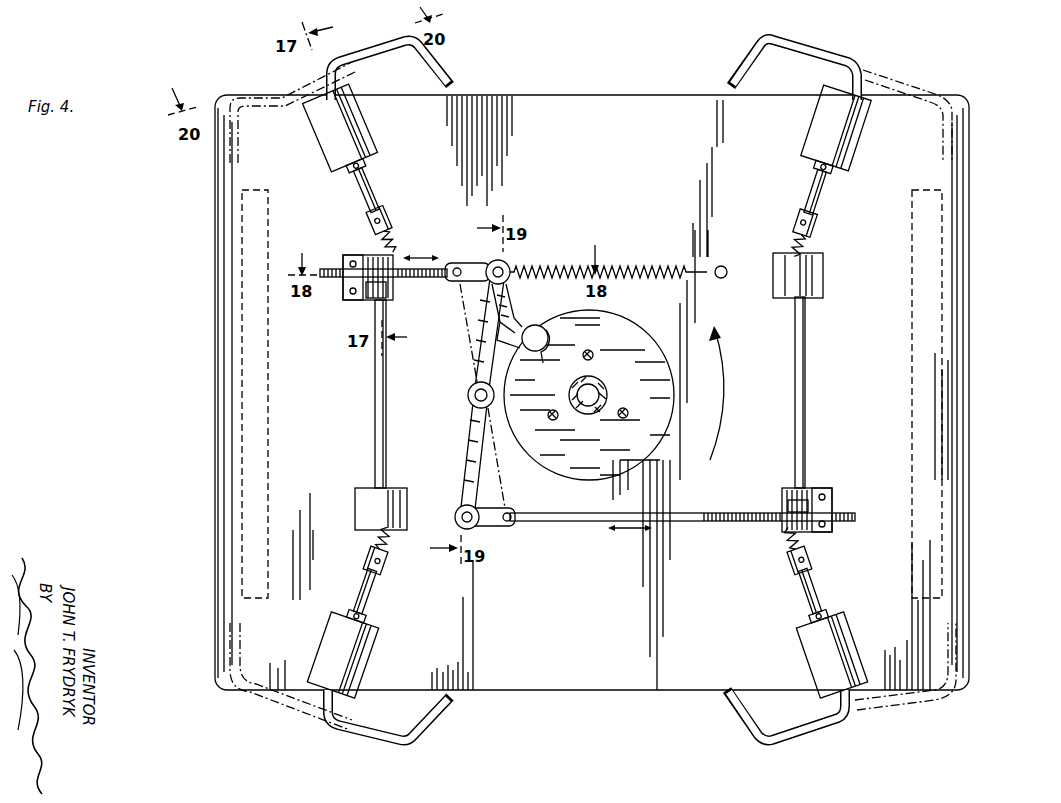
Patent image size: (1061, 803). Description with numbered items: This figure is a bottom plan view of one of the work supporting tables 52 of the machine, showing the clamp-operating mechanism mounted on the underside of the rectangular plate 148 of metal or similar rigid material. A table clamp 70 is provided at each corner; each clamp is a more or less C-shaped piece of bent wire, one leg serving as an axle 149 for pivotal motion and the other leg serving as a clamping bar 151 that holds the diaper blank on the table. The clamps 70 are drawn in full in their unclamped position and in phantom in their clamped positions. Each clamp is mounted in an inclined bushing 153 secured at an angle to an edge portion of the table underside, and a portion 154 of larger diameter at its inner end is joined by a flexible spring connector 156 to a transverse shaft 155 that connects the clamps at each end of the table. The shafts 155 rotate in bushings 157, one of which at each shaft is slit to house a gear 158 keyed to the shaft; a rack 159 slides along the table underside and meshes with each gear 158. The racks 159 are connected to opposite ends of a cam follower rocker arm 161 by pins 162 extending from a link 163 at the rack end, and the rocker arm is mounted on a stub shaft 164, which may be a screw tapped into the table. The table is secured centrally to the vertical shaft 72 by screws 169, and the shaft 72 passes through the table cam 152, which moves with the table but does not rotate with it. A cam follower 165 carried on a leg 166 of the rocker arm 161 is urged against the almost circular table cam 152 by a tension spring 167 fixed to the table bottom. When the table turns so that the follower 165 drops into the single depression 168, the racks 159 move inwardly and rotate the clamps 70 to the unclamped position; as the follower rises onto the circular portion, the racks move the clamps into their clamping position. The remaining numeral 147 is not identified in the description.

The table 52 is at (968, 325).
The table clamp 70 is at (374, 50).
The vertical shaft 72 is at (609, 385).
The guide slot 147 is at (270, 437).
The plate 148 is at (571, 600).
The axle 149 is at (371, 187).
The clamping bar 151 is at (439, 74).
The table cam 152 is at (629, 325).
The inclined bushing 153 is at (358, 138).
The portion of larger diameter 154 is at (387, 208).
The transverse shaft 155 is at (375, 403).
The flexible spring connector 156 is at (387, 236).
The bushing 157 is at (368, 302).
The gear 158 is at (408, 280).
The rack 159 is at (412, 277).
The cam follower rocker arm 161 is at (467, 438).
The pin 162 is at (510, 263).
The link 163 is at (472, 262).
The stub shaft 164 is at (470, 398).
The cam follower 165 is at (543, 319).
The leg 166 is at (515, 319).
The tension spring 167 is at (666, 266).
The depression 168 is at (538, 352).
The screw 169 is at (588, 353).